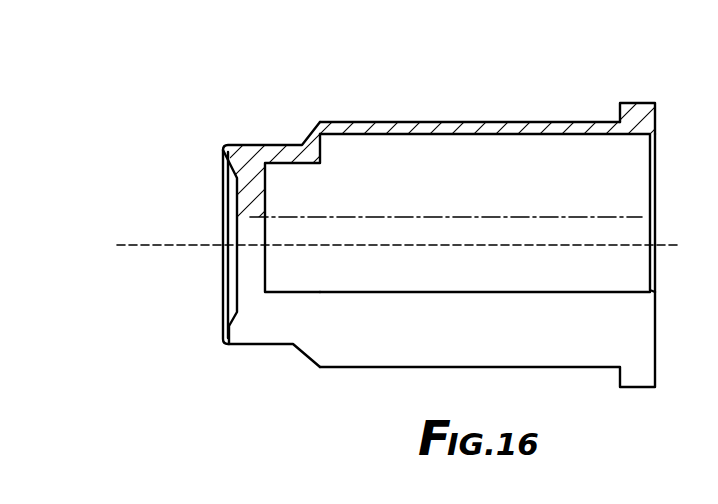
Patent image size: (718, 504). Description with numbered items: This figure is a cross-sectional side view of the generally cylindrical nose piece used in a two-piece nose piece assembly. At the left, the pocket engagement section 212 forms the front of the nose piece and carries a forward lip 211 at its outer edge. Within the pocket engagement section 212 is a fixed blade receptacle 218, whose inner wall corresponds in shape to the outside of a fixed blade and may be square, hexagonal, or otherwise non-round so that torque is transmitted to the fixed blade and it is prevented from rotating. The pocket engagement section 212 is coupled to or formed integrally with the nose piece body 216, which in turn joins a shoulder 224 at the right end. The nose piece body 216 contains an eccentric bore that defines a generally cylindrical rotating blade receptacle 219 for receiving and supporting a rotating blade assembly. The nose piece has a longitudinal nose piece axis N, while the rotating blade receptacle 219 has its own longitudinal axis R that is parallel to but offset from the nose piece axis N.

The forward lip 211 is at (220, 144).
The pocket engagement section 212 is at (238, 145).
The nose piece body 216 is at (467, 122).
The fixed blade receptacle 218 is at (287, 158).
The rotating blade receptacle 219 is at (592, 133).
The shoulder 224 is at (638, 103).
The nose piece axis N is at (143, 243).
The longitudinal axis of rotating blade receptacle R is at (622, 217).